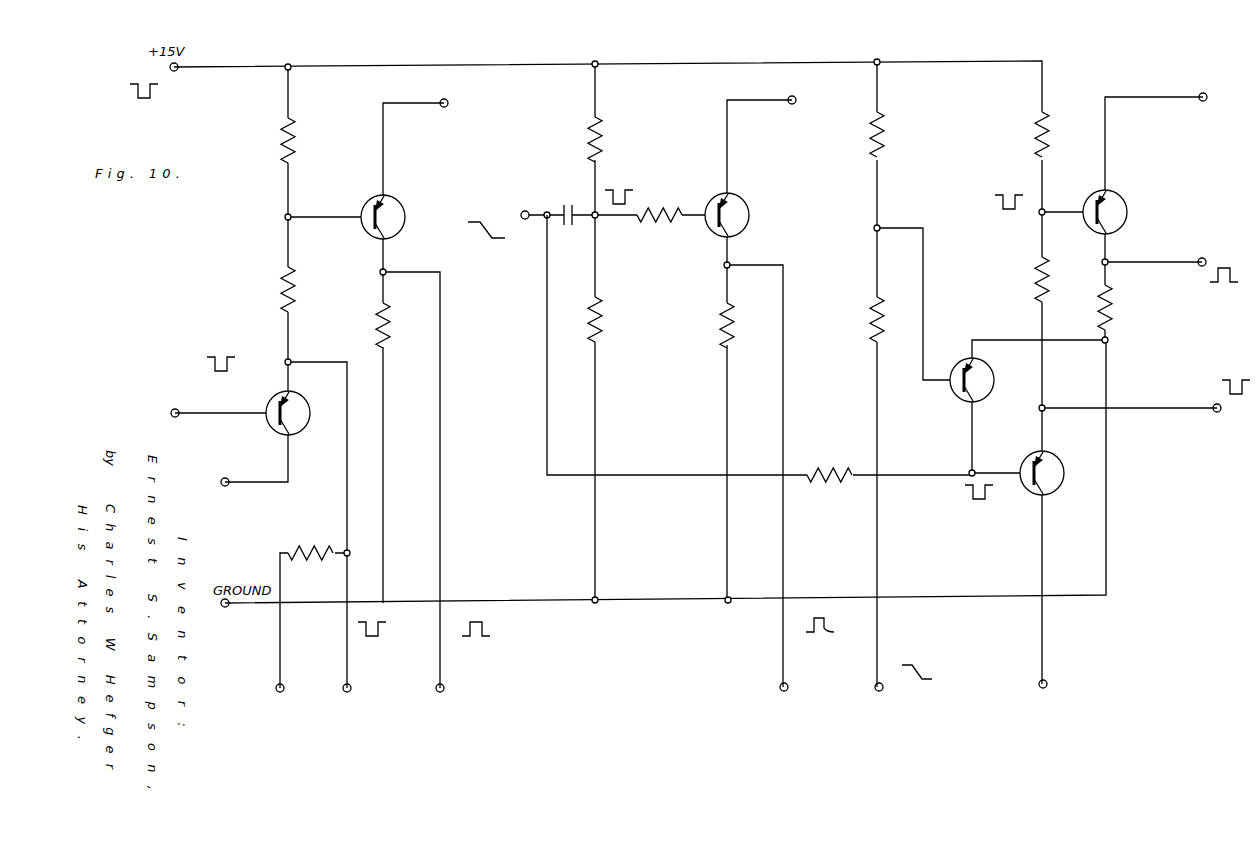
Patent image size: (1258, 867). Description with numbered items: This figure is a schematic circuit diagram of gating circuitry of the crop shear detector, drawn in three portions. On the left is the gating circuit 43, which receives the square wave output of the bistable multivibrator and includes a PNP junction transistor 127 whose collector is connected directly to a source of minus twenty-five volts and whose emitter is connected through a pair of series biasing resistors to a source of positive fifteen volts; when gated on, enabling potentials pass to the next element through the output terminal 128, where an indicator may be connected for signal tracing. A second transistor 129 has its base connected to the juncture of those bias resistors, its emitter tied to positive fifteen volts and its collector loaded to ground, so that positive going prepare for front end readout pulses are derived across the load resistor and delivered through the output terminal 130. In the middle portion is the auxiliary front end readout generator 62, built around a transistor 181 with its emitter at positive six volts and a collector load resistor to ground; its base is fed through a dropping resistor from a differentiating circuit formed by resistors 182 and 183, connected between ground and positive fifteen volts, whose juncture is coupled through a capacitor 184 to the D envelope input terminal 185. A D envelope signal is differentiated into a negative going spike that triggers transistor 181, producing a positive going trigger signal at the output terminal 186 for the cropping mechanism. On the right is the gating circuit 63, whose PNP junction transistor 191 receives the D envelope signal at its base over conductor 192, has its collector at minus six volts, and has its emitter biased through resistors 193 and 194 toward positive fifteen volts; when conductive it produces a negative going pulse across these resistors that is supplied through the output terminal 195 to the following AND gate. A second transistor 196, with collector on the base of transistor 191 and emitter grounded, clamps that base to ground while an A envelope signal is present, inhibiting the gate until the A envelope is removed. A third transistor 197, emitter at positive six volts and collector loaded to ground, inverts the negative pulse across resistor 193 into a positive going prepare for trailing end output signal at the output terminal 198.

The gating circuit 43 is at (241, 256).
The auxiliary front end readout generator 62 is at (680, 148).
The gating circuit 63 is at (978, 243).
The PNP junction transistor 127 is at (305, 430).
The output terminal 128 is at (350, 685).
The second transistor 129 is at (405, 207).
The output terminal 130 is at (443, 685).
The transistor 181 is at (750, 212).
The resistor 182 is at (585, 140).
The resistor 183 is at (598, 335).
The capacitor 184 is at (570, 227).
The D envelope input terminal 185 is at (530, 210).
The output terminal 186 is at (780, 684).
The PNP junction transistor 191 is at (1058, 490).
The conductor 192 is at (640, 473).
The resistor 193 is at (1050, 281).
The resistor 194 is at (1050, 136).
The output terminal 195 is at (1213, 404).
The second transistor 196 is at (988, 396).
The third transistor 197 is at (1124, 205).
The output terminal 198 is at (1196, 266).